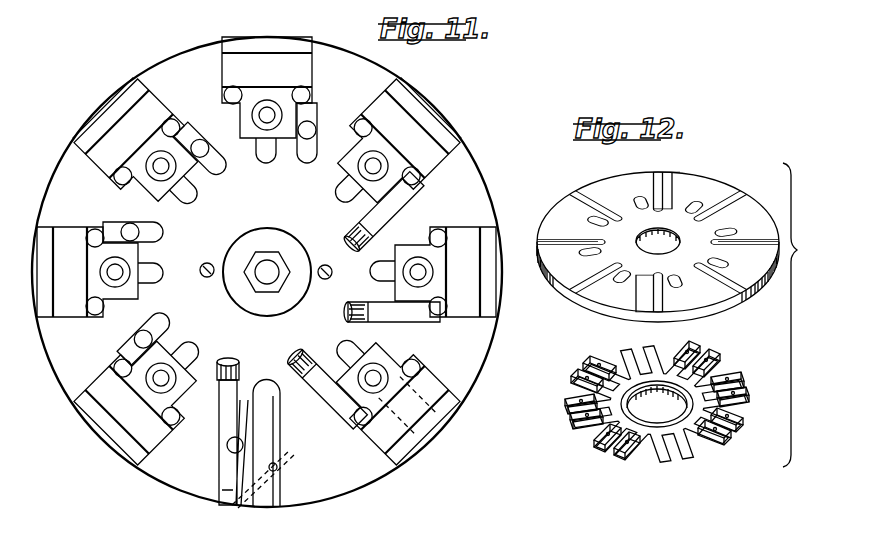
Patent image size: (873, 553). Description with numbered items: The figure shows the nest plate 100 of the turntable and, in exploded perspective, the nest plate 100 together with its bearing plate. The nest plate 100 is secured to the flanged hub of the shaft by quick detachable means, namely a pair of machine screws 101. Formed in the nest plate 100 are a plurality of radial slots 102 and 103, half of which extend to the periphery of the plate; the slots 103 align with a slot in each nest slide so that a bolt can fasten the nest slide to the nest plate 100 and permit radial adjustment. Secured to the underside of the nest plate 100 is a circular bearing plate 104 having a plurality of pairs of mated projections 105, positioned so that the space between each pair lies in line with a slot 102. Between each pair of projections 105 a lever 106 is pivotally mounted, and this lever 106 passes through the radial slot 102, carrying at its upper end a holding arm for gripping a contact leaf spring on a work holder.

In FIG. 11, the nest plate 100 is at (190, 58).
In FIG. 12, the nest plate 100 is at (603, 185).
In FIG. 11, the machine screws 101 is at (322, 262).
In FIG. 11, the radial slots 102 is at (185, 312).
In FIG. 12, the radial slots 102 is at (573, 215).
In FIG. 11, the radial slots 103 is at (263, 380).
In FIG. 12, the radial slots 103 is at (746, 247).
In FIG. 12, the circular bearing plate 104 is at (612, 397).
In FIG. 12, the mated projections 105 is at (722, 370).
In FIG. 11, the lever 106 is at (227, 415).